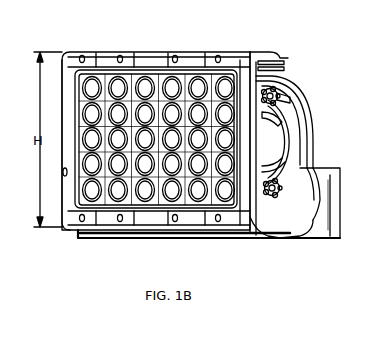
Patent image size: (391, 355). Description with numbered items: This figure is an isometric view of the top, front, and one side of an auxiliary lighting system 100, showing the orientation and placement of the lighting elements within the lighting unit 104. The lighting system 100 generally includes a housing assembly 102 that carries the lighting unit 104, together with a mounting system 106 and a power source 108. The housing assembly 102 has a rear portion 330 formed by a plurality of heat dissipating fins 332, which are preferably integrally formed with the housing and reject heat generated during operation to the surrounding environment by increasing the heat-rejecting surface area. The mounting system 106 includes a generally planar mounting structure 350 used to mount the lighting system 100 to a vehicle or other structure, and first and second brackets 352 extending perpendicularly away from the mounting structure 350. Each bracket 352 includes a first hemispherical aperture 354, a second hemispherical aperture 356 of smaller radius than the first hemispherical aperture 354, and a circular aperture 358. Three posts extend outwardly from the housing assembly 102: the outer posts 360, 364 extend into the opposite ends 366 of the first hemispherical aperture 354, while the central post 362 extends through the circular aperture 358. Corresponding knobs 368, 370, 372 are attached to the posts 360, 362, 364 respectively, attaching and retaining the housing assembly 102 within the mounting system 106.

The auxiliary lighting system 100 is at (291, 260).
The housing assembly 102 is at (257, 54).
The lighting unit 104 is at (73, 226).
The mounting system 106 is at (302, 234).
The power source 108 is at (341, 212).
The rear portion 330 is at (304, 80).
The heat dissipating fins 332 is at (266, 64).
The mounting structure 350 is at (231, 242).
The brackets 352 is at (329, 222).
The first hemispherical aperture 354 is at (310, 118).
The second hemispherical aperture 356 is at (288, 131).
The circular aperture 358 is at (308, 166).
The outer post 360 is at (288, 101).
The central post 362 is at (281, 189).
The outer post 364 is at (293, 199).
The opposite ends 366 is at (257, 60).
The knob 368 is at (279, 94).
The knob 370 is at (314, 137).
The knob 372 is at (290, 180).